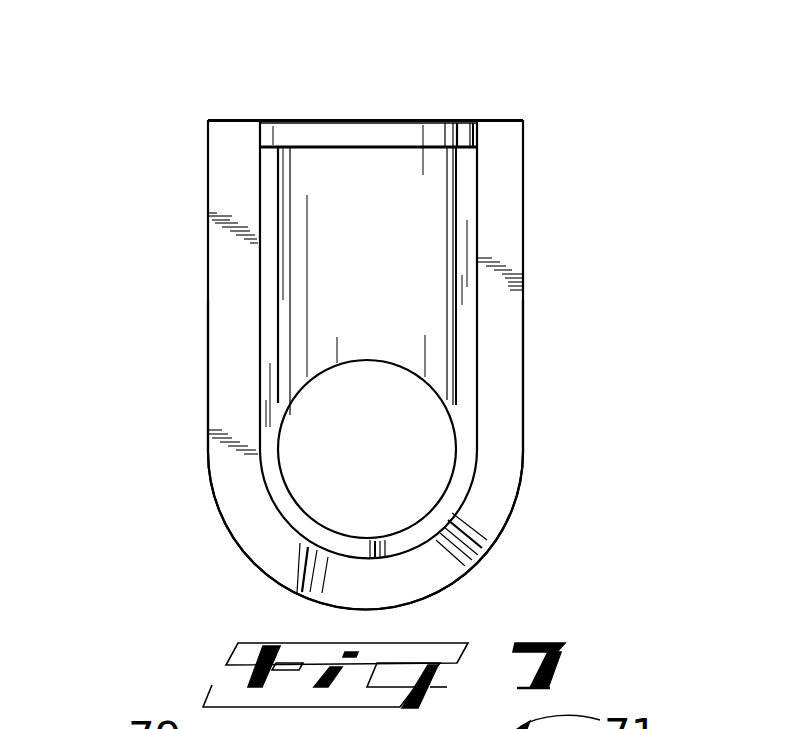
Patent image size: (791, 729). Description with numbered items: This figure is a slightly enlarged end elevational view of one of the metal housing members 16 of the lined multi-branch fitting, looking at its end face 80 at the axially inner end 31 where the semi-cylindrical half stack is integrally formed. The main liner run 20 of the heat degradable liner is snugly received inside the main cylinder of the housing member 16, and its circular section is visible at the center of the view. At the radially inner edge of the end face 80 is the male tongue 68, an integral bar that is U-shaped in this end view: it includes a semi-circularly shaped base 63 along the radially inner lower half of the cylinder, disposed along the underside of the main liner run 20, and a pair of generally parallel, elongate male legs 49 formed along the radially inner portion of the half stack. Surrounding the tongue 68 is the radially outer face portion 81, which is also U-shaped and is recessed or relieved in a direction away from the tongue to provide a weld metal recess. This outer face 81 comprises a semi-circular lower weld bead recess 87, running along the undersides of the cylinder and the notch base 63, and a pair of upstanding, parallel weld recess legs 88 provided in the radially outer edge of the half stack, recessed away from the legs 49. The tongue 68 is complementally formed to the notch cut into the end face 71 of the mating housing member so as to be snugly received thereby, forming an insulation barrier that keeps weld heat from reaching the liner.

The metallic housing member 16 is at (158, 386).
The main liner run 20 is at (548, 483).
The axially inner end 31 is at (548, 274).
The elongate male legs 49 is at (267, 182).
The semi-circularly shaped base 63 is at (293, 517).
The male tongue 68 is at (285, 106).
The end face 71 is at (178, 454).
The end face 80 is at (487, 96).
The radially outer face portion 81 is at (231, 285).
The semi-circular lower weld bead recess 87 is at (283, 558).
The weld recess legs 88 is at (507, 170).